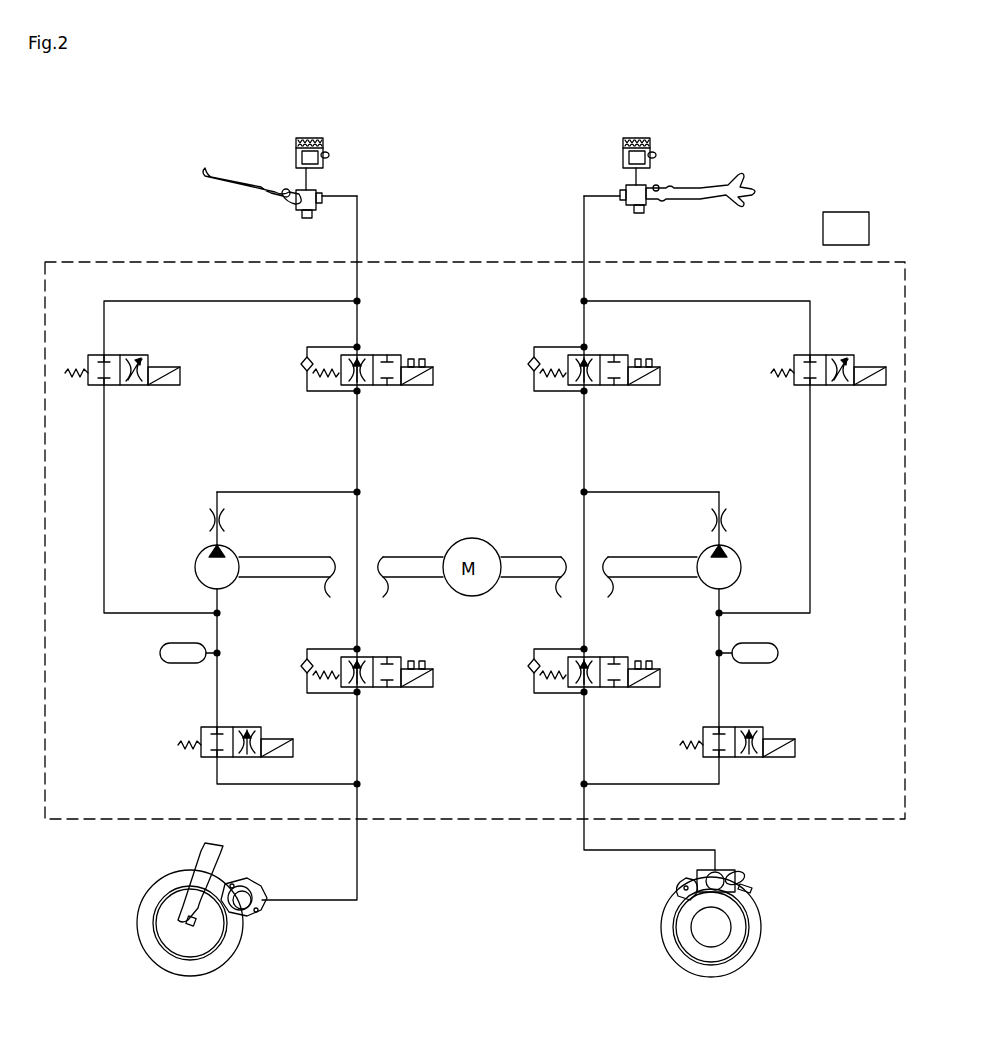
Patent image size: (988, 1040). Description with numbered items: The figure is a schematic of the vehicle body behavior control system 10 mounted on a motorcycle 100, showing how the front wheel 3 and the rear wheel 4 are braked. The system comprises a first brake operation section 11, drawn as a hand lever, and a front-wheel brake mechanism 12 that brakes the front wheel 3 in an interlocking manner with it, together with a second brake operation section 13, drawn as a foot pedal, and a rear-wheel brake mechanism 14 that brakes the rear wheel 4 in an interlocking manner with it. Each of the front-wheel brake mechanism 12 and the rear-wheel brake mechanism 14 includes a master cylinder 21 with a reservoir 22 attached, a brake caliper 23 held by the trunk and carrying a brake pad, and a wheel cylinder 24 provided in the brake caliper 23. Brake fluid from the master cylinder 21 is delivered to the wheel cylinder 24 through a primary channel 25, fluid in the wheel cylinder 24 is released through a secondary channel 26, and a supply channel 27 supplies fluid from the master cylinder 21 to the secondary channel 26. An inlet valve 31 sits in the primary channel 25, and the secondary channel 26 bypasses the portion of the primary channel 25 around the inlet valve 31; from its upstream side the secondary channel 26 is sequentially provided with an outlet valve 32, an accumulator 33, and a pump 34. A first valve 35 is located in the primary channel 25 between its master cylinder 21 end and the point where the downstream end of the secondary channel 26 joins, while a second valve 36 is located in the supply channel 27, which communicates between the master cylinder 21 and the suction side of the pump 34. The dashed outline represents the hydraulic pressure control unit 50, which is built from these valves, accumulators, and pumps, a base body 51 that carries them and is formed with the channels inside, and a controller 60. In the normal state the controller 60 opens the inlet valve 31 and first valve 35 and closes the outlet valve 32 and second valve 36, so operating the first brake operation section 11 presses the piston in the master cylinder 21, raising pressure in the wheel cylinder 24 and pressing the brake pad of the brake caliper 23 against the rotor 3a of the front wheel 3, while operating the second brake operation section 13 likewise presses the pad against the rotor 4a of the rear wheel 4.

The motorcycle 100 is at (906, 116).
The vehicle body behavior control system 10 is at (98, 174).
The first brake operation section 11 is at (222, 163).
The front-wheel brake mechanism 12 is at (382, 178).
The second brake operation section 13 is at (730, 178).
The rear-wheel brake mechanism 14 is at (564, 176).
The master cylinder 21 is at (312, 212).
The reservoir 22 is at (305, 138).
The brake caliper 23 is at (242, 884).
The wheel cylinder 24 is at (248, 893).
The primary channel 25 is at (357, 436).
The secondary channel 26 is at (312, 784).
The supply channel 27 is at (210, 301).
The inlet valve 31 is at (392, 690).
The outlet valve 32 is at (264, 727).
The accumulator 33 is at (160, 644).
The pump 34 is at (226, 598).
The first valve 35 is at (410, 388).
The second valve 36 is at (150, 388).
The hydraulic pressure control unit 50 is at (812, 193).
The base body 51 is at (82, 263).
The controller 60 is at (852, 212).
The front wheel 3 is at (136, 886).
The rotor 3a is at (152, 952).
The rear wheel 4 is at (656, 958).
The rotor 4a is at (754, 938).